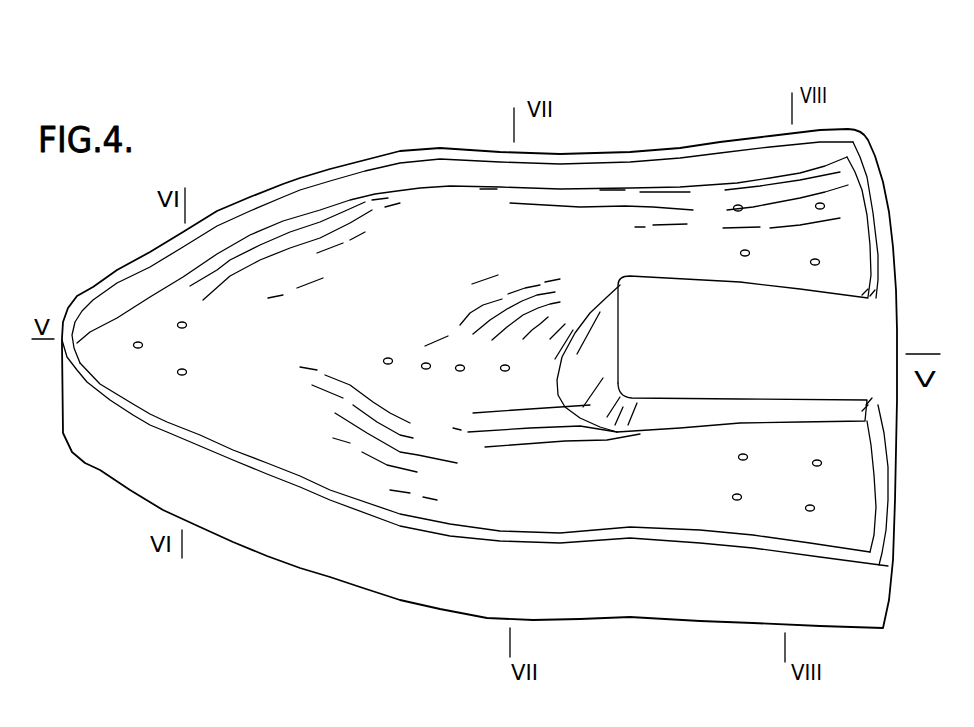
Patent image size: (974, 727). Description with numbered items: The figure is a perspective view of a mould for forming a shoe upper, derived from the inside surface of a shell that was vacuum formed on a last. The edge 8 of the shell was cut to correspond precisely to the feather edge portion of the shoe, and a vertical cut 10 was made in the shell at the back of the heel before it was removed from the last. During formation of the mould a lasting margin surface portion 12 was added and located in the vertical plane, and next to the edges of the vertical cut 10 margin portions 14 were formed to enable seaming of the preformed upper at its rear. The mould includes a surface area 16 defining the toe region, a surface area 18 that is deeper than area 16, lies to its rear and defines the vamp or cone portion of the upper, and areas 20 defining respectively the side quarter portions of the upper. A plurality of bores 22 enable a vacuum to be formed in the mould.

The edge of the shell 8 is at (397, 189).
The vertical cut 10 is at (868, 213).
The lasting margin surface portion 12 is at (348, 183).
The margin portions 14 is at (862, 176).
The surface area defining the toe region 16 is at (275, 377).
The surface area defining the vamp or cone portion 18 is at (460, 317).
The areas defining the side quarter portions 20 is at (713, 257).
The bores 22 is at (187, 327).